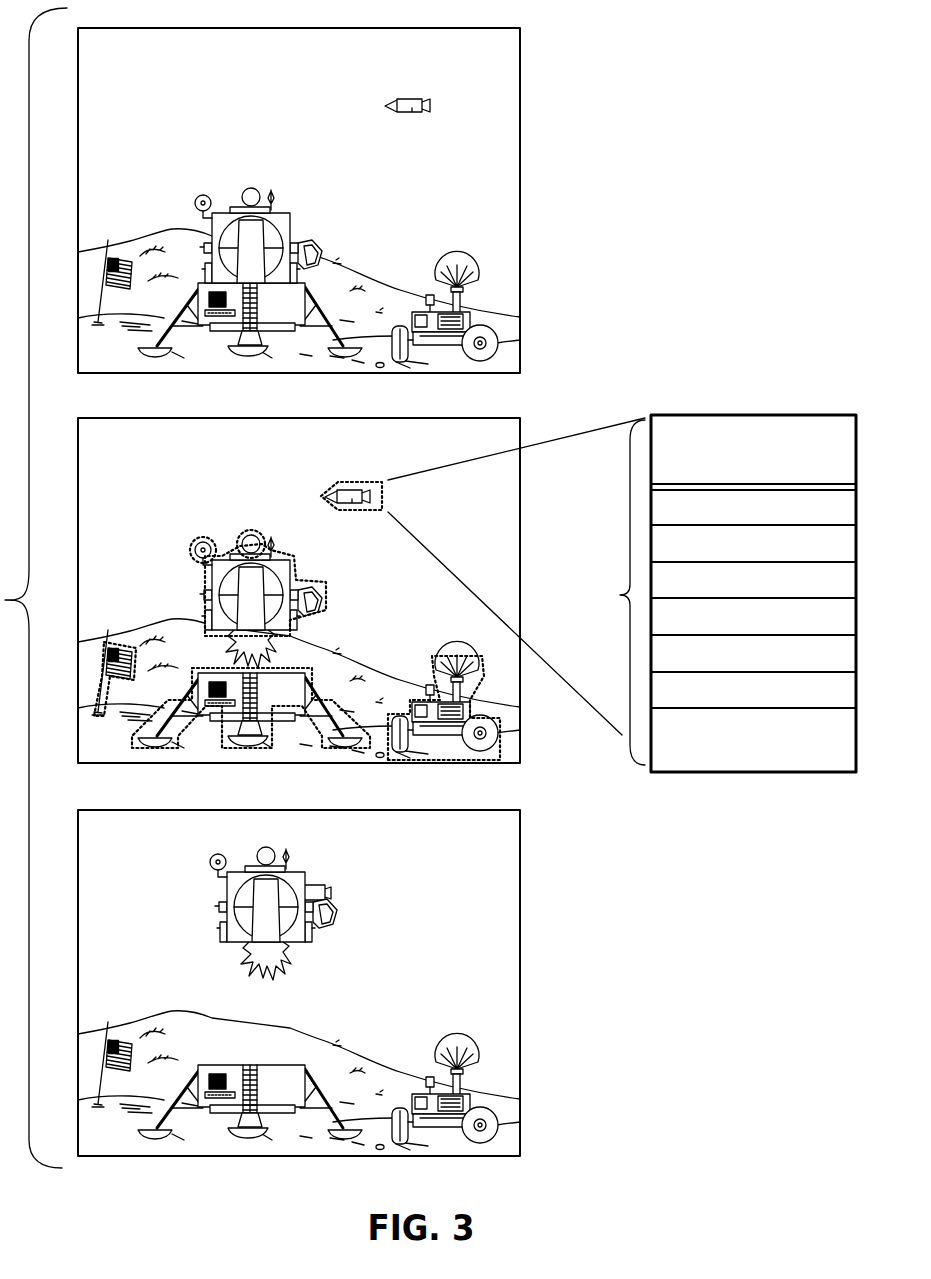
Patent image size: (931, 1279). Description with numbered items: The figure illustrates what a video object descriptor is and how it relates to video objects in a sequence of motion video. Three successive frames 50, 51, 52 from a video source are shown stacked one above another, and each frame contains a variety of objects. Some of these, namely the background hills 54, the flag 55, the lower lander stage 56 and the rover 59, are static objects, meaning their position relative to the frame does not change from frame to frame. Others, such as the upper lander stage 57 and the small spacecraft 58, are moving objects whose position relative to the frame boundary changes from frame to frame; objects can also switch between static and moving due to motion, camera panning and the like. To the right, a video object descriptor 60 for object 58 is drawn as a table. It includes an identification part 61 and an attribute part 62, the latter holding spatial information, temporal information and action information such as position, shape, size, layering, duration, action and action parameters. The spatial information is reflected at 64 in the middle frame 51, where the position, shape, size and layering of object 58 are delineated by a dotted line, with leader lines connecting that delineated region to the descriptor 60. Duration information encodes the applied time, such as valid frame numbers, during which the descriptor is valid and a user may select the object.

The first frame 50 is at (77, 213).
The second frame 51 is at (77, 583).
The third frame 52 is at (77, 955).
The static object 54 is at (141, 240).
The static object 55 is at (108, 258).
The static object 56 is at (303, 312).
The moving object 57 is at (289, 228).
The moving object 58 is at (412, 113).
The static object 59 is at (447, 263).
The video object descriptor 60 is at (823, 396).
The identification part 61 is at (805, 773).
The attribute part 62 is at (614, 592).
The delineated object region 64 is at (345, 480).